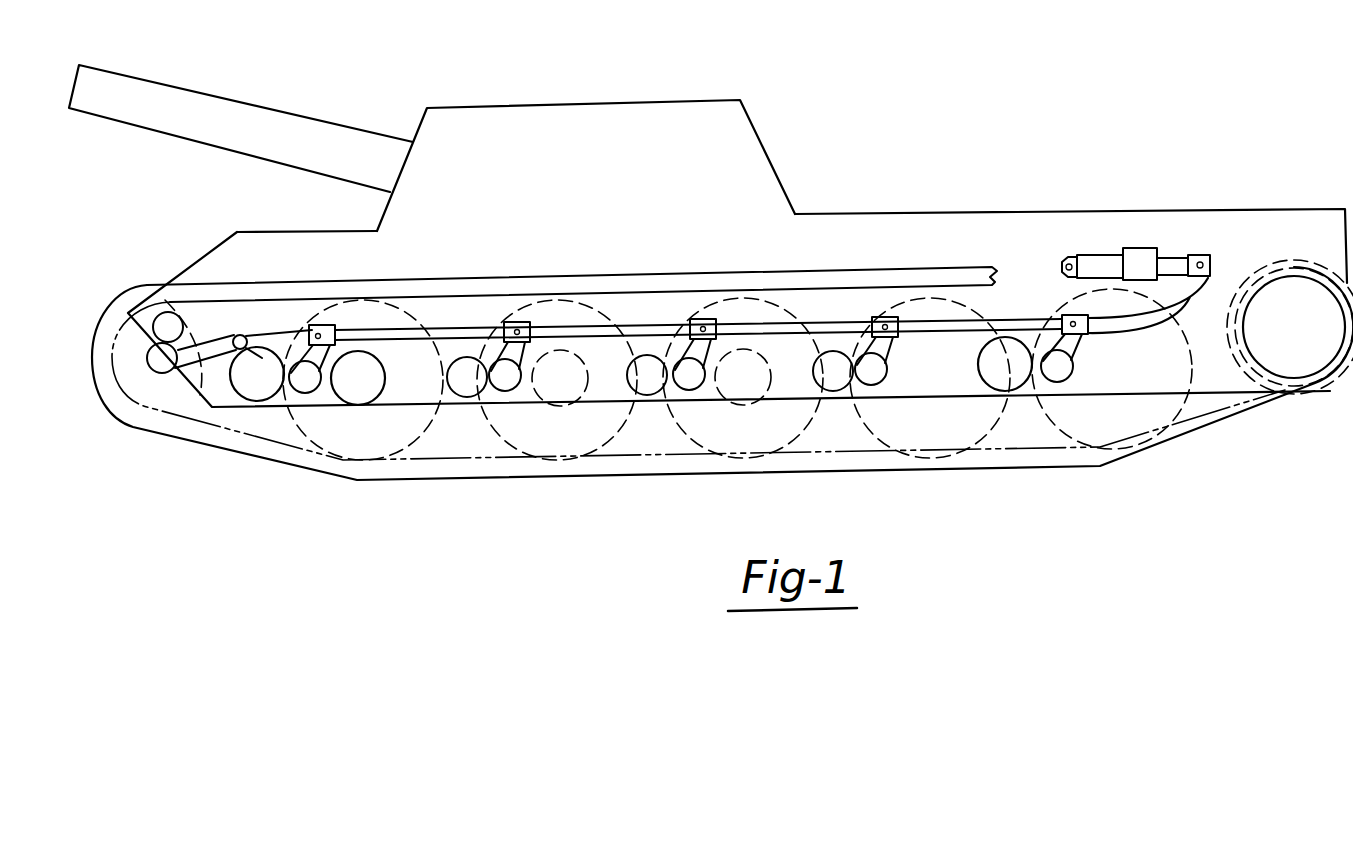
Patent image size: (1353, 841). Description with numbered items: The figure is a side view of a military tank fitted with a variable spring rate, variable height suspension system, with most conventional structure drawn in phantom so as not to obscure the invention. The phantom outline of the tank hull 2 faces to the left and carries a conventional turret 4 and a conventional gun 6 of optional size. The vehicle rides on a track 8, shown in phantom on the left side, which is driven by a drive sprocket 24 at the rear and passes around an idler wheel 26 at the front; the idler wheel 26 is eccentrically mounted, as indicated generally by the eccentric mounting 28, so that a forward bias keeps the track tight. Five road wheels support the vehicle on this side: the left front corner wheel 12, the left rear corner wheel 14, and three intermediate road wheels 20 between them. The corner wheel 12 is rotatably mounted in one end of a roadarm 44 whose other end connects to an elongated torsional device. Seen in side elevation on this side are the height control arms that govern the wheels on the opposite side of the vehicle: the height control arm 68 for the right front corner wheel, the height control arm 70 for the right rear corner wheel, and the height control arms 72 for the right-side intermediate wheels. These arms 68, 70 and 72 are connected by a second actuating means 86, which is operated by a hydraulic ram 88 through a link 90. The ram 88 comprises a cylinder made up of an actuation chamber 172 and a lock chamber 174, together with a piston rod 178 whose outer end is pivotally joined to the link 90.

The tank hull 2 is at (855, 201).
The turret 4 is at (657, 112).
The gun 6 is at (234, 97).
The track 8 is at (1010, 467).
The left front corner road wheel 12 is at (283, 425).
The left rear corner road wheel 14 is at (1192, 425).
The intermediate road wheels 20 is at (662, 432).
The drive sprocket 24 is at (1260, 380).
The idler wheel 26 is at (198, 410).
The eccentric mounting 28 is at (202, 348).
The roadarm 44 is at (353, 460).
The height control arm 68 is at (318, 322).
The height control arm 70 is at (1075, 343).
The height control arms 72 is at (535, 333).
The second actuating means 86 is at (440, 330).
The hydraulic ram 88 is at (1145, 222).
The link 90 is at (1197, 293).
The actuation chamber 172 is at (1082, 265).
The lock chamber 174 is at (1143, 250).
The piston rod 178 is at (1176, 257).